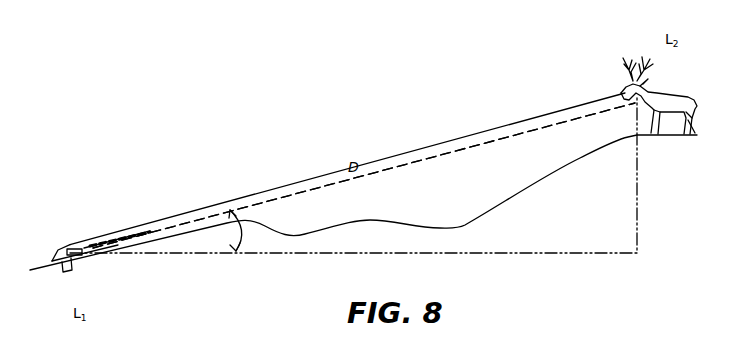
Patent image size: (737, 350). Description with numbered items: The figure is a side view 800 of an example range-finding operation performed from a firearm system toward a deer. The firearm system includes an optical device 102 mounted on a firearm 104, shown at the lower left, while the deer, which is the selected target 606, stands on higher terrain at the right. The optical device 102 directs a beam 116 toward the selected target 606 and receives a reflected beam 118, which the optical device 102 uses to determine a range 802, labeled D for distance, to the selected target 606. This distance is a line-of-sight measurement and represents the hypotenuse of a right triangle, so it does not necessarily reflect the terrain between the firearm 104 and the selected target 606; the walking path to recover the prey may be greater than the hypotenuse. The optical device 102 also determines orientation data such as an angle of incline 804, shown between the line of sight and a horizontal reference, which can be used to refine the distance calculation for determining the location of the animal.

The side view 800 is at (150, 74).
The range 802 is at (303, 178).
The angle of incline 804 is at (240, 232).
The optical device 102 is at (72, 249).
The firearm 104 is at (66, 258).
The selected target 606 is at (665, 88).
The beam 116 is at (364, 175).
The reflected beam 118 is at (357, 174).